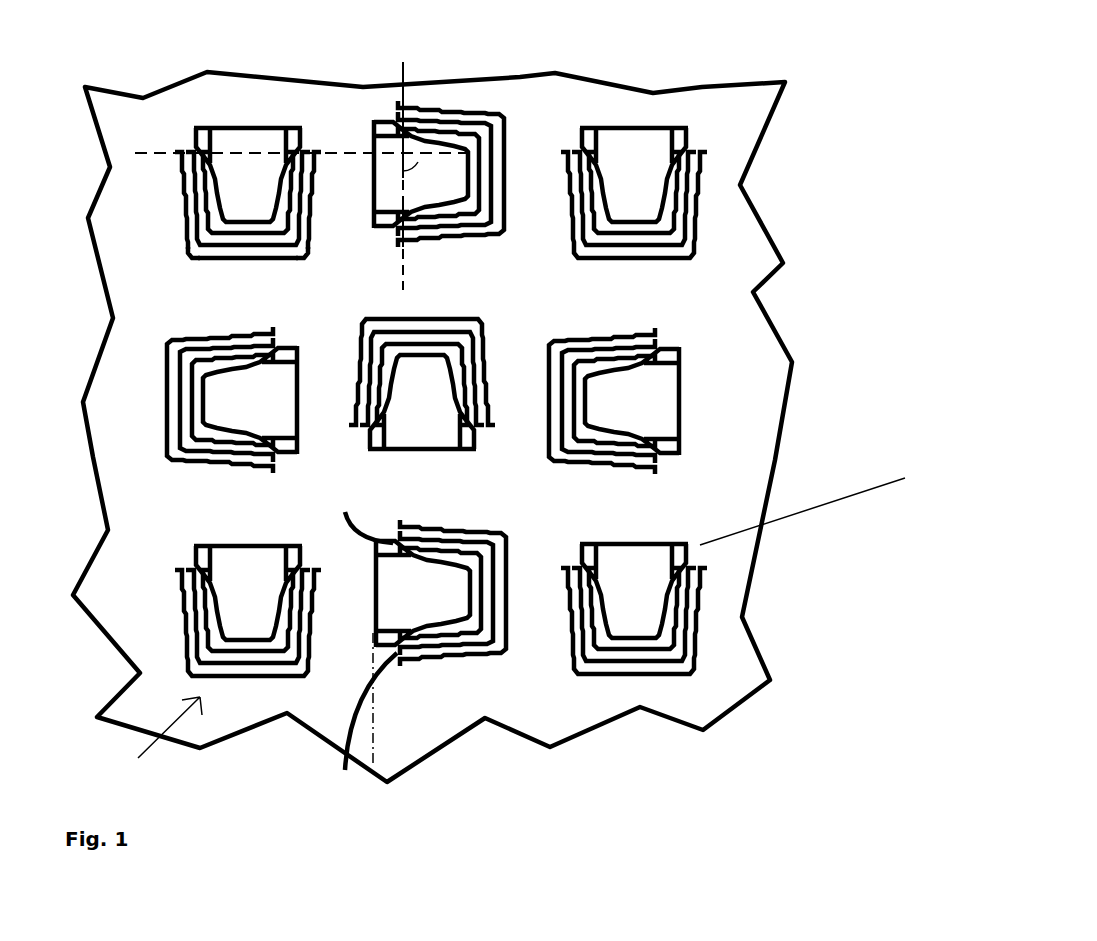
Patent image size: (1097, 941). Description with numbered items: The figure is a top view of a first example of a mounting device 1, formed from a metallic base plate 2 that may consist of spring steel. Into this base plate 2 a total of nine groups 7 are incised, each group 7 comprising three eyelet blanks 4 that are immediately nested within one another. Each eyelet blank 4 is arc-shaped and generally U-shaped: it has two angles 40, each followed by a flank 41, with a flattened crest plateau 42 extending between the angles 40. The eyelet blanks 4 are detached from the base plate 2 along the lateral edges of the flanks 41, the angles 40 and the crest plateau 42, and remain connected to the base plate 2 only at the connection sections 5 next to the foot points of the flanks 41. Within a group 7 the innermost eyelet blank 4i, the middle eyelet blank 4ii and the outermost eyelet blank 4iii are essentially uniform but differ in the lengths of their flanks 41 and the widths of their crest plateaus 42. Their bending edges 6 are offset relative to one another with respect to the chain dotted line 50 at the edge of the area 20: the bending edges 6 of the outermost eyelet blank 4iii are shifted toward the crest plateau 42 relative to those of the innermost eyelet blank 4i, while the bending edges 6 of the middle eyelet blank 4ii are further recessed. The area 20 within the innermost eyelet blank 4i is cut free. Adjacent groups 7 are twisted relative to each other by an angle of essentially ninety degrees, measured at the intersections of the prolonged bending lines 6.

The mounting device 1 is at (728, 67).
The metallic base plate 2 is at (737, 343).
The eyelet blank 4 is at (188, 628).
The innermost eyelet blank 4i is at (620, 648).
The middle eyelet blank 4ii is at (668, 652).
The outermost eyelet blank 4iii is at (690, 640).
The connection section 5 is at (410, 655).
The bending edge 6 is at (294, 161).
The group 7 is at (160, 745).
The area 20 is at (435, 406).
The angle 40 is at (323, 270).
The flank 41 is at (325, 230).
The crest plateau 42 is at (243, 251).
The chain dotted line 50 is at (373, 743).